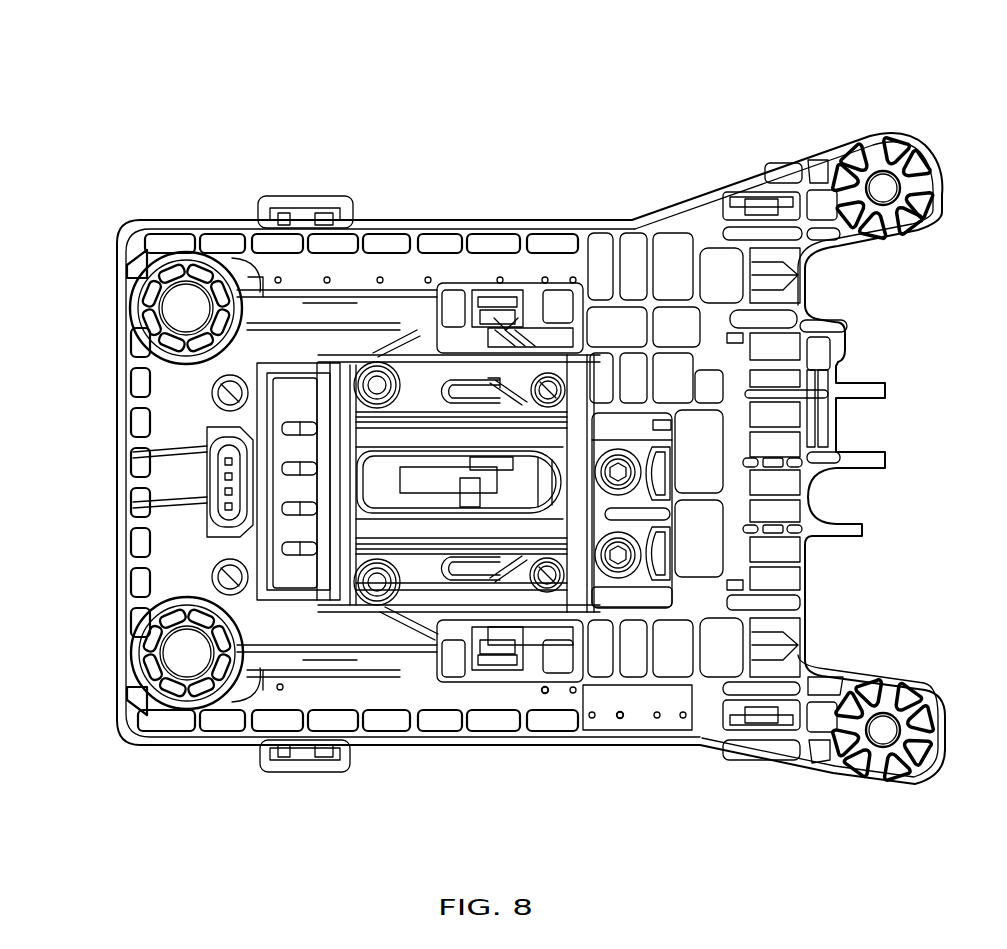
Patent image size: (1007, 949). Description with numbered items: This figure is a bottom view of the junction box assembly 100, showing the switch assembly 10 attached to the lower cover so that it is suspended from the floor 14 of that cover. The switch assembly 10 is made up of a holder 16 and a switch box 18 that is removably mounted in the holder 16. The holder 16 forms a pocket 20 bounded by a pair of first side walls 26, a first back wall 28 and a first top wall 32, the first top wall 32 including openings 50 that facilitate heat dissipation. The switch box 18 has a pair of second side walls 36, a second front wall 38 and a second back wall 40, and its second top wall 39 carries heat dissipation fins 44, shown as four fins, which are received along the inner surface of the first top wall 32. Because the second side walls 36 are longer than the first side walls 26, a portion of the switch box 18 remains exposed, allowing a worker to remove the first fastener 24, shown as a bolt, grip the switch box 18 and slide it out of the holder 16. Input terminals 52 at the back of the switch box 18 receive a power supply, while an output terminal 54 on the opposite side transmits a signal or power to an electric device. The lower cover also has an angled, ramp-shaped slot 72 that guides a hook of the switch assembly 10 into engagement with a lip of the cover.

The junction box assembly 100 is at (780, 50).
The switch assembly 10 is at (200, 400).
The floor 14 is at (385, 618).
The holder 16 is at (502, 325).
The switch box 18 is at (248, 352).
The pocket 20 is at (265, 680).
The first fastener 24 is at (360, 360).
The first side walls 26 is at (547, 697).
The first back wall 28 is at (627, 690).
The first top wall 32 is at (408, 375).
The second side walls 36 is at (288, 395).
The second front wall 38 is at (217, 683).
The second top wall 39 is at (302, 410).
The second back wall 40 is at (612, 410).
The heat dissipation fins 44 is at (325, 415).
The openings 50 is at (505, 372).
The input terminal 52 is at (635, 468).
The output terminal 54 is at (172, 712).
The slot 72 is at (124, 268).